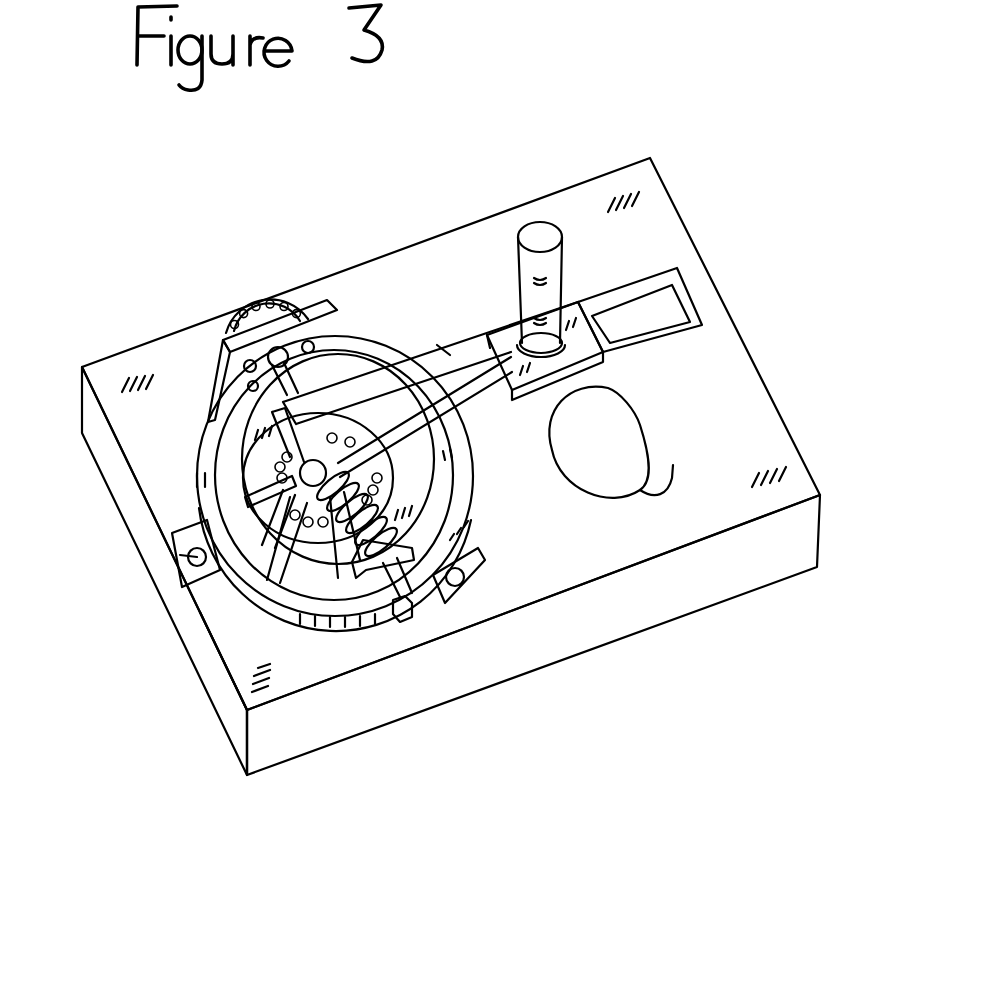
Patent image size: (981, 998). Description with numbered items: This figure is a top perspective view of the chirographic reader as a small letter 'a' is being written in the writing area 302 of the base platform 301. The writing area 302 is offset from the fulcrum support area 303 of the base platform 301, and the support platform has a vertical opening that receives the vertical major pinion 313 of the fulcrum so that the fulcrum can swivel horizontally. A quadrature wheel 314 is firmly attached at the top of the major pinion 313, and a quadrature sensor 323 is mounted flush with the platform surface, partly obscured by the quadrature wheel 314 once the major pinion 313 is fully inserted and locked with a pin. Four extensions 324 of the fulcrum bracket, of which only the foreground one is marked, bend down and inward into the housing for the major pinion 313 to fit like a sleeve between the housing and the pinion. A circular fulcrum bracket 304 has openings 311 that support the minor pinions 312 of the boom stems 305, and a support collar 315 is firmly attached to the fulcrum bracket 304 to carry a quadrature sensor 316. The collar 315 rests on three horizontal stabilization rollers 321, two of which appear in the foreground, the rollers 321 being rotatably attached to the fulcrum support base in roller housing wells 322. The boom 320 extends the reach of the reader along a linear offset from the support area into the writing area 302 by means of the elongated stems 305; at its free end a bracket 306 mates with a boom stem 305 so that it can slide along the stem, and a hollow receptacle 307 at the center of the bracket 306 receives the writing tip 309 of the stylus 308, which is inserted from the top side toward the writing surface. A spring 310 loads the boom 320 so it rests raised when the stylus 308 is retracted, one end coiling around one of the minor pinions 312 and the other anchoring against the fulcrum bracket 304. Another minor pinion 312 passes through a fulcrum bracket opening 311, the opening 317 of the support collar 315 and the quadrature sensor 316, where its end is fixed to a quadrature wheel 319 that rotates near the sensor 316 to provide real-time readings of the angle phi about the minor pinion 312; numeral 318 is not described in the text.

The base platform 301 is at (540, 637).
The writing area 302 is at (490, 212).
The fulcrum support area 303 is at (203, 310).
The circular fulcrum bracket 304 is at (193, 462).
The elongated stems 305 is at (437, 345).
The bracket 306 is at (485, 320).
The hollow receptacle 307 is at (565, 348).
The stylus 308 is at (568, 265).
The writing tip 309 is at (557, 405).
The spring 310 is at (307, 596).
The openings 311 is at (238, 420).
The minor pinions 312 is at (250, 387).
The vertical major pinion 313 is at (300, 493).
The quadrature wheel 314 is at (245, 484).
The support collar 315 is at (357, 330).
The quadrature sensor 316 is at (215, 342).
The opening 317 is at (232, 352).
The bolt 318 is at (308, 340).
The quadrature wheel 319 is at (243, 310).
The boom 320 is at (703, 302).
The horizontal stabilization rollers 321 is at (173, 548).
The roller housing wells 322 is at (207, 593).
The quadrature sensor 323 is at (240, 703).
The extensions 324 is at (247, 608).